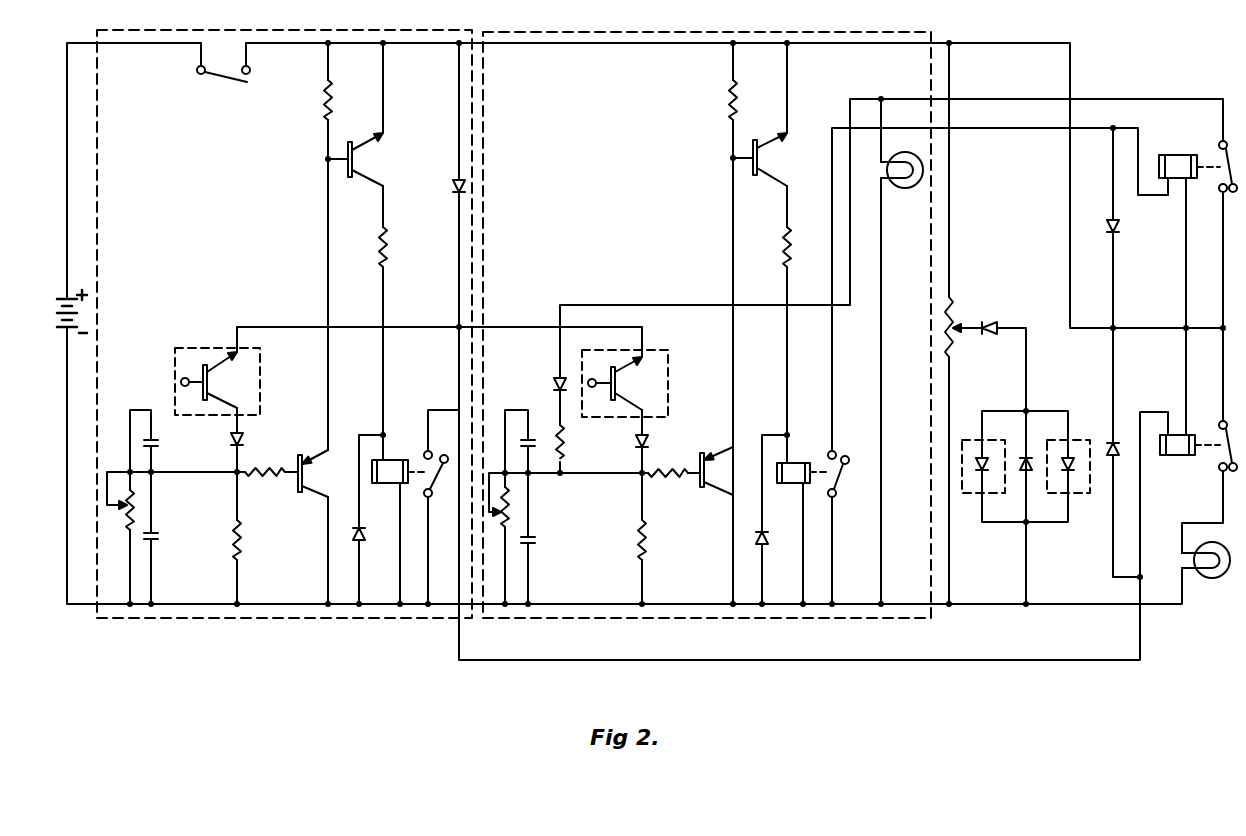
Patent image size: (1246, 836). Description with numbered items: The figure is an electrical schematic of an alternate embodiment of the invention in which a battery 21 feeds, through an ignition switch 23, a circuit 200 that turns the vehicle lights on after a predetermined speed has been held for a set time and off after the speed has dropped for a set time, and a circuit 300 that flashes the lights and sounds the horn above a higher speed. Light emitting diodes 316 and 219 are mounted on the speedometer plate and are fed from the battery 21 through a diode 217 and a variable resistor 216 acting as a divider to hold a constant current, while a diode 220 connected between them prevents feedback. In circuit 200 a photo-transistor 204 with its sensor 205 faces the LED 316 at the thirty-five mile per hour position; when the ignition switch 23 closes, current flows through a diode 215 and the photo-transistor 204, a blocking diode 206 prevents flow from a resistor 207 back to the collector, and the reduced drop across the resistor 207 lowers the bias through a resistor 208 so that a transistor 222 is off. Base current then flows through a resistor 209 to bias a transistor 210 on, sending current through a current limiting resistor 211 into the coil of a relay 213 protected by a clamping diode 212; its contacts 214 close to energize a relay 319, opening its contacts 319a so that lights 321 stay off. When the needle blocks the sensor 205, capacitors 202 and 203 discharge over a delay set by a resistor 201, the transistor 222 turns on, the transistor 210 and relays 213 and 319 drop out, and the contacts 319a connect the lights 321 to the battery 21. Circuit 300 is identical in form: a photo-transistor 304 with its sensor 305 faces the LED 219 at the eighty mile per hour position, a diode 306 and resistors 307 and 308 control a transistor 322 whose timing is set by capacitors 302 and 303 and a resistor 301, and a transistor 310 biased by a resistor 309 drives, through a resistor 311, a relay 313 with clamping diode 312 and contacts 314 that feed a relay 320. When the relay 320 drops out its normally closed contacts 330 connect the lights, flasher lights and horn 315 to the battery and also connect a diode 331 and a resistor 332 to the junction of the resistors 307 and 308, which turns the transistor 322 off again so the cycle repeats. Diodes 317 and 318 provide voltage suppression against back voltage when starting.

The battery 21 is at (63, 300).
The ignition switch 23 is at (216, 80).
The circuit 200 is at (290, 622).
The resistor 201 is at (136, 506).
The capacitor 202 is at (158, 537).
The capacitor 203 is at (158, 446).
The photo-transistor 204 is at (262, 375).
The sensor 205 is at (182, 380).
The diode 206 is at (242, 444).
The resistor 207 is at (243, 540).
The resistor 208 is at (264, 478).
The resistor 209 is at (324, 100).
The transistor 210 is at (364, 172).
The current limiting resistor 211 is at (386, 250).
The diode 212 is at (364, 542).
The relay 213 is at (390, 461).
The relay contacts 214 is at (428, 488).
The diode 215 is at (456, 190).
The variable resistor 216 is at (956, 312).
The diode 217 is at (993, 325).
The light emitting diode 219 is at (972, 498).
The diode 220 is at (1030, 458).
The transistor 222 is at (310, 498).
The circuit 300 is at (680, 622).
The resistor 301 is at (510, 508).
The capacitor 302 is at (534, 540).
The capacitor 303 is at (527, 438).
The photo-transistor 304 is at (668, 372).
The sensor 305 is at (591, 388).
The diode 306 is at (648, 444).
The resistor 307 is at (648, 540).
The resistor 308 is at (667, 480).
The resistor 309 is at (729, 100).
The transistor 310 is at (768, 172).
The resistor 311 is at (784, 250).
The diode 312 is at (778, 529).
The relay 313 is at (790, 463).
The contacts 314 is at (848, 486).
The lights, flasher lights, and horn 315 is at (904, 189).
The light emitting diode 316 is at (1078, 498).
The diode 317 is at (1117, 440).
The diode 318 is at (1118, 232).
The relay 319 is at (1192, 456).
The contacts 319a is at (1220, 472).
The relay 320 is at (1178, 182).
The lights 321 is at (1212, 579).
The transistor 322 is at (712, 498).
The contacts 330 is at (1218, 142).
The diode 331 is at (558, 382).
The resistor 332 is at (566, 446).